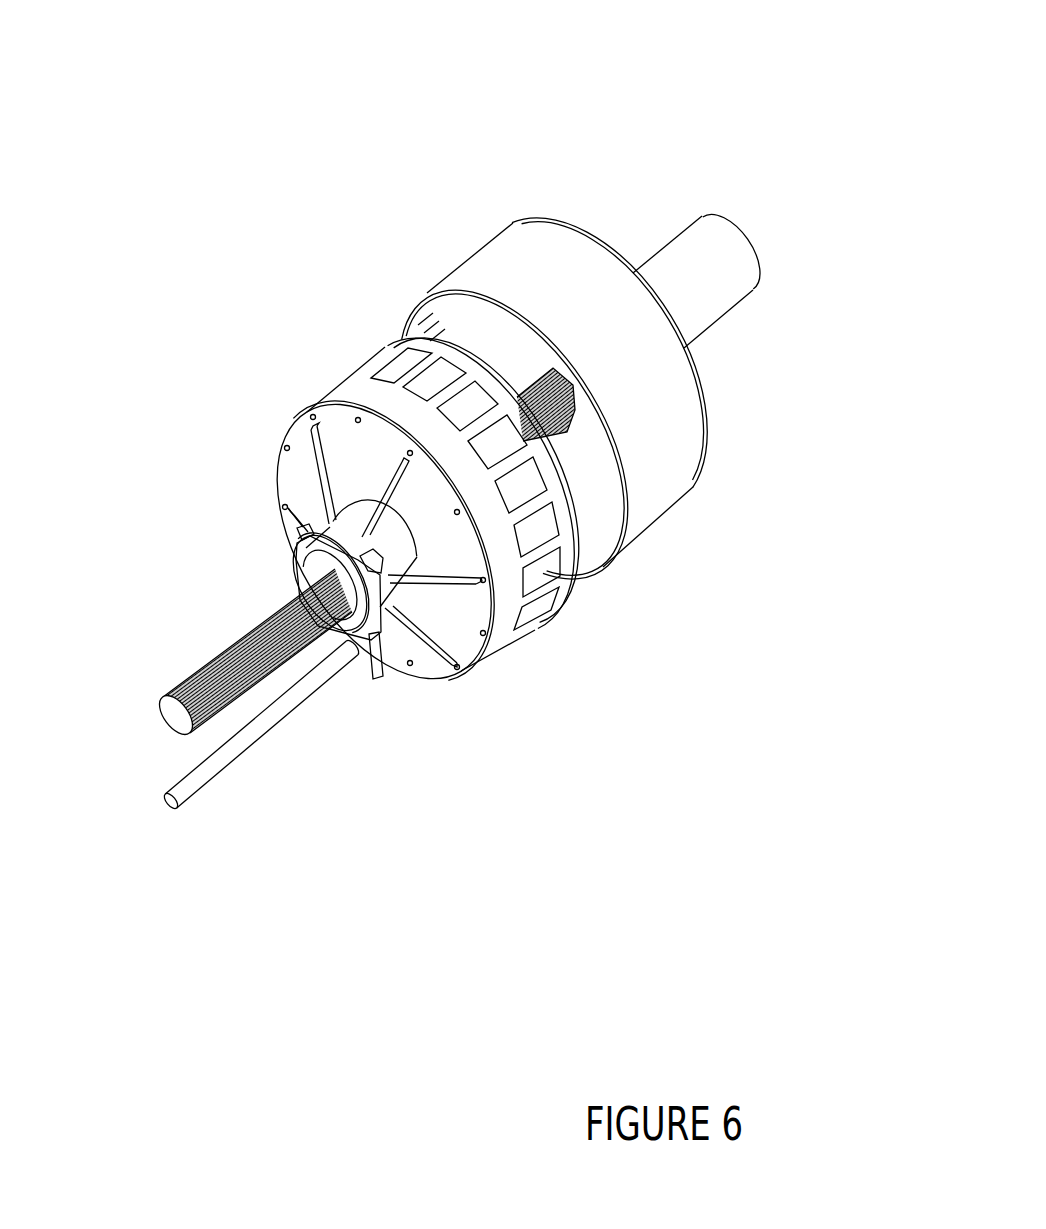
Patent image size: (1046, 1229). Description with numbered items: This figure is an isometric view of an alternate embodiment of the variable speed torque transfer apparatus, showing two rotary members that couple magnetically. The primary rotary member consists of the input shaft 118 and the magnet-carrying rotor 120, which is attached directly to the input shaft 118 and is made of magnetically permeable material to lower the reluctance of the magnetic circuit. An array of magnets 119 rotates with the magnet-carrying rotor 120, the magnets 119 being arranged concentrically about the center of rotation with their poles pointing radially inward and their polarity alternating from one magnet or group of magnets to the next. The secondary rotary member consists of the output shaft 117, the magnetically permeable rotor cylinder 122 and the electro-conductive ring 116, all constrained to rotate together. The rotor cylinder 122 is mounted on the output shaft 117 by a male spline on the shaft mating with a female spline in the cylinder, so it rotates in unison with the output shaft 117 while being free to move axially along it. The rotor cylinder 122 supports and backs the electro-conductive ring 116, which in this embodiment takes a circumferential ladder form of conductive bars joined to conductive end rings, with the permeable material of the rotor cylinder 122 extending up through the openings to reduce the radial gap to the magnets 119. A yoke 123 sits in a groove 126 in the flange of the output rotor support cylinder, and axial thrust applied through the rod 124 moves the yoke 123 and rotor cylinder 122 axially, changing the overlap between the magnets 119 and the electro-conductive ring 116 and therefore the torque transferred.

The electro-conductive ring 116 is at (468, 633).
The output shaft 117 is at (198, 565).
The input shaft 118 is at (635, 220).
The magnets 119 is at (600, 524).
The magnet-carrying rotor 120 is at (607, 389).
The rotor cylinder 122 is at (578, 583).
The yoke 123 is at (441, 700).
The rod 124 is at (333, 803).
The groove 126 is at (207, 446).